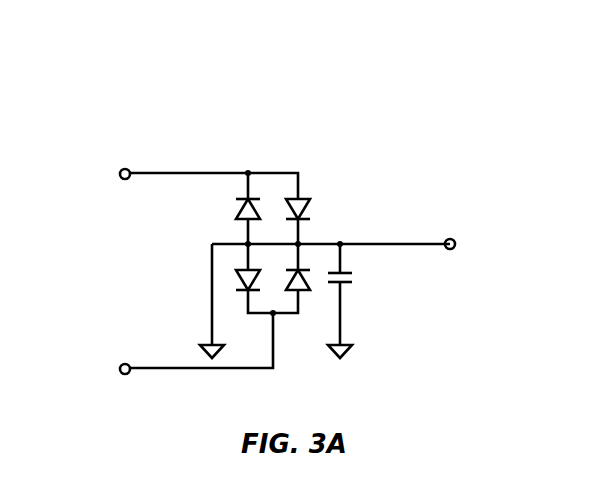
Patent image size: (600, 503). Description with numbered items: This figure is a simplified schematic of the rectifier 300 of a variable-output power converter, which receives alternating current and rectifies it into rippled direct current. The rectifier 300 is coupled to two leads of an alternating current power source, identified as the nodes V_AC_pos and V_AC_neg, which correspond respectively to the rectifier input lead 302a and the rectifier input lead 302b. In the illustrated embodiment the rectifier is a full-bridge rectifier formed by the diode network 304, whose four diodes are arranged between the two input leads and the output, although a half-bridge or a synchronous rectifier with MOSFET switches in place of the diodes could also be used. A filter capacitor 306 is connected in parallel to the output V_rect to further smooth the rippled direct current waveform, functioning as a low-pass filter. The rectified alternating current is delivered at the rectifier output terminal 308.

The rectifier 300 is at (178, 80).
The rectifier input lead 302a is at (119, 174).
The rectifier input lead 302b is at (119, 369).
The diode network 304 is at (232, 165).
The filter capacitor 306 is at (354, 282).
The rectifier output terminal 308 is at (456, 245).